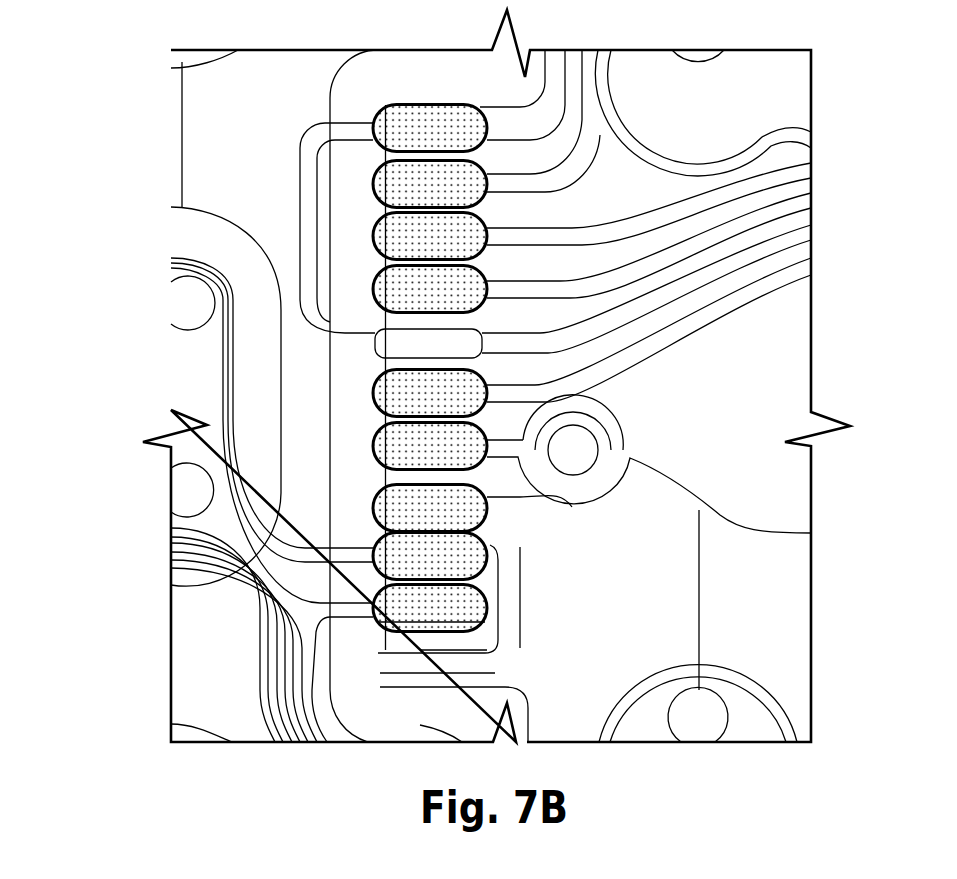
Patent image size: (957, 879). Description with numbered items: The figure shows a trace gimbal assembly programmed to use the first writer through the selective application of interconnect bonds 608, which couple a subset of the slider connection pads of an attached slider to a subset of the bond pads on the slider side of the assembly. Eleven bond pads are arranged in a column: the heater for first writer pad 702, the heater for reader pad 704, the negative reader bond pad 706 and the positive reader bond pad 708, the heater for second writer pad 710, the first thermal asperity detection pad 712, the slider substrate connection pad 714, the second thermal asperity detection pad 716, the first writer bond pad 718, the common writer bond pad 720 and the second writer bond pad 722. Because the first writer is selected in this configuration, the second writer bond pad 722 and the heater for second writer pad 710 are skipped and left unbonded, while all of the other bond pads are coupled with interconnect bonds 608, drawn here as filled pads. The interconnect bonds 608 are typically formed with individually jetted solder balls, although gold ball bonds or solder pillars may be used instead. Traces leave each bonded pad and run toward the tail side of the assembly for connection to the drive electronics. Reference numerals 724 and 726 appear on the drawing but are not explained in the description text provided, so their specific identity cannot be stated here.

The interconnect bond 608 is at (447, 138).
The heater for Writer 1 (Hw1) pad 702 is at (488, 141).
The heater for reader (Hr) pad 704 is at (488, 193).
The reader bond pad (R−) 706 is at (490, 247).
The reader bond pad (R+) 708 is at (490, 299).
The heater for Writer 2 (Hw2) pad 710 is at (482, 353).
The first thermal asperity detection pad (Tx) 712 is at (490, 405).
The slider substrate connection (G) pad 714 is at (492, 458).
The second thermal asperity detection pad (Ty) 716 is at (492, 512).
The Writer 1 bond pad (W1+) 718 is at (492, 567).
The common writer bond pad (W1−) 720 is at (480, 613).
The Writer 2 bond pad (W2+) 722 is at (478, 665).
The trace routing region 724 is at (300, 205).
The trace routing region 726 is at (520, 636).